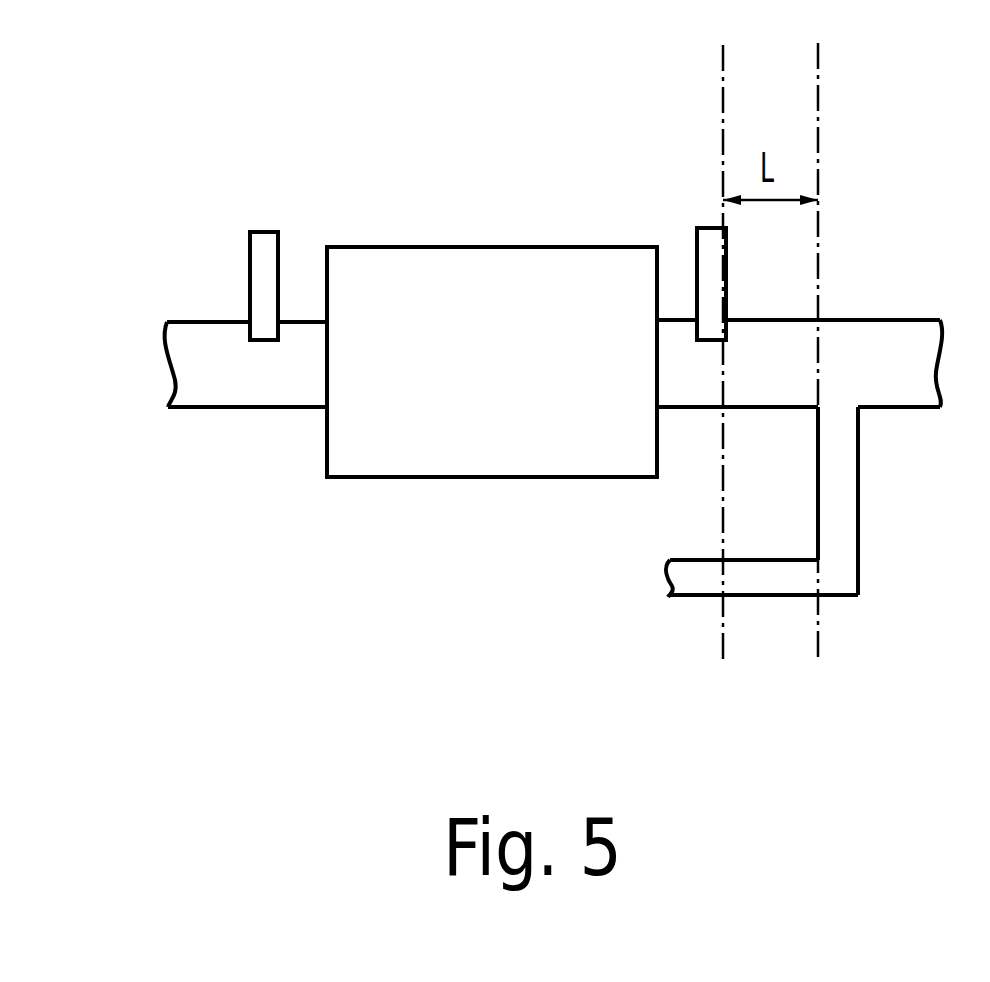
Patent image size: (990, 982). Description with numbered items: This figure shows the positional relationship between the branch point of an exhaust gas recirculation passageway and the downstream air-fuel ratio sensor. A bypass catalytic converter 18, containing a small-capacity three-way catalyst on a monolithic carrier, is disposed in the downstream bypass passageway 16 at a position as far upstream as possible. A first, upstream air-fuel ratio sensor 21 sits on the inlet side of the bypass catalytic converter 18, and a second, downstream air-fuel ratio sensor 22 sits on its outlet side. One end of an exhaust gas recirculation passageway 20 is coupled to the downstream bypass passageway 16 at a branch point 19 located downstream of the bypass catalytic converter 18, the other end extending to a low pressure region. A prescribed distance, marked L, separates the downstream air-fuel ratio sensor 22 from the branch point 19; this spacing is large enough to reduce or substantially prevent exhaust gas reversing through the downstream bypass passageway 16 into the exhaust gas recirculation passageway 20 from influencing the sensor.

The downstream bypass passageway 16 is at (225, 388).
The bypass catalytic converter 18 is at (502, 247).
The branch point 19 is at (835, 380).
The exhaust gas recirculation passageway 20 is at (837, 582).
The upstream air-fuel ratio sensor 21 is at (265, 230).
The downstream air-fuel ratio sensor 22 is at (702, 227).